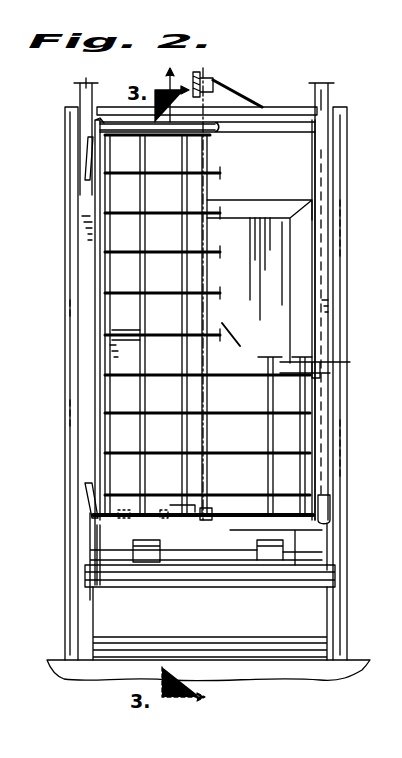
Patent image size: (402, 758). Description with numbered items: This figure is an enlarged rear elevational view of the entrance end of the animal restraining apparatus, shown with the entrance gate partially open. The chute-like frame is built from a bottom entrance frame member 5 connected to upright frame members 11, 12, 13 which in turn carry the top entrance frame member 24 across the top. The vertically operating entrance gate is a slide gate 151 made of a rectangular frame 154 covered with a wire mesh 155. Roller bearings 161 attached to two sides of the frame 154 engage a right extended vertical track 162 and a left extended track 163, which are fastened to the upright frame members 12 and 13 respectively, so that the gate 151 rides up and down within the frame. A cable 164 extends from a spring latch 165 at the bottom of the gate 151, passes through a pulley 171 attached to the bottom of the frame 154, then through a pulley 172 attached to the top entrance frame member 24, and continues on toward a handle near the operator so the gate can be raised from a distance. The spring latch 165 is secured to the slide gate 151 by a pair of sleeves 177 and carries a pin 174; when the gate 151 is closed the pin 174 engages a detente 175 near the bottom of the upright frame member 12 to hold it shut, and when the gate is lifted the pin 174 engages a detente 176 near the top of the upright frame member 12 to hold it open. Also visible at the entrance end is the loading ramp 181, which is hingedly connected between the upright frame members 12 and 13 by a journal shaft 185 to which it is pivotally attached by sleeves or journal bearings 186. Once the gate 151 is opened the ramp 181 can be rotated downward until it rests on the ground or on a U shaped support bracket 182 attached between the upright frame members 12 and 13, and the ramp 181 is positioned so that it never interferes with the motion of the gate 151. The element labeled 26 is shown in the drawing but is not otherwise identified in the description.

The upright frame member 11 is at (392, 0).
The upright frame member 12 is at (78, 606).
The upright frame member 13 is at (336, 612).
The top entrance frame member 24 is at (288, 113).
The rack assembly 26 is at (242, 320).
The bottom entrance frame member 5 is at (258, 648).
The slide gate 151 is at (215, 174).
The rectangular frame 154 is at (95, 126).
The wire mesh 155 is at (146, 294).
The roller bearings 161 is at (322, 364).
The right extended vertical track 162 is at (76, 83).
The left extended track 163 is at (330, 93).
The cable 164 is at (246, 98).
The spring latch 165 is at (168, 522).
The pulley 171 is at (212, 508).
The pulley 172 is at (210, 72).
The pin 174 is at (96, 522).
The detente 175 is at (86, 486).
The detente 176 is at (86, 166).
The sleeves 177 is at (168, 510).
The loading ramp 181 is at (287, 198).
The U shaped support bracket 182 is at (192, 576).
The journal shaft 185 is at (254, 565).
The journal bearings 186 is at (144, 565).